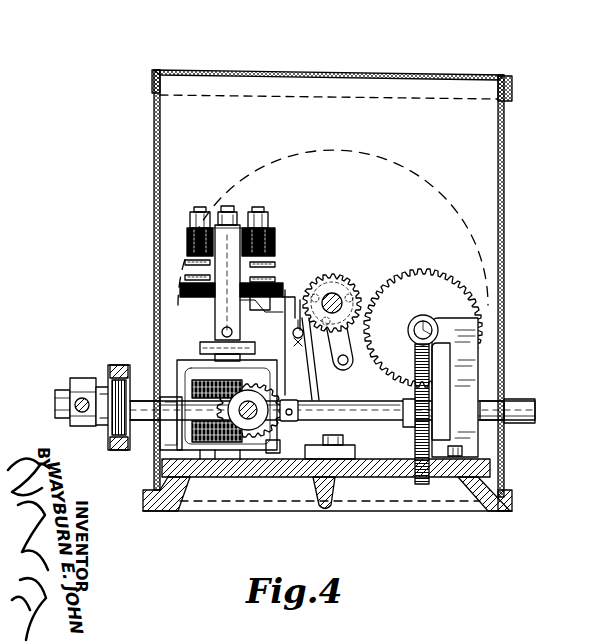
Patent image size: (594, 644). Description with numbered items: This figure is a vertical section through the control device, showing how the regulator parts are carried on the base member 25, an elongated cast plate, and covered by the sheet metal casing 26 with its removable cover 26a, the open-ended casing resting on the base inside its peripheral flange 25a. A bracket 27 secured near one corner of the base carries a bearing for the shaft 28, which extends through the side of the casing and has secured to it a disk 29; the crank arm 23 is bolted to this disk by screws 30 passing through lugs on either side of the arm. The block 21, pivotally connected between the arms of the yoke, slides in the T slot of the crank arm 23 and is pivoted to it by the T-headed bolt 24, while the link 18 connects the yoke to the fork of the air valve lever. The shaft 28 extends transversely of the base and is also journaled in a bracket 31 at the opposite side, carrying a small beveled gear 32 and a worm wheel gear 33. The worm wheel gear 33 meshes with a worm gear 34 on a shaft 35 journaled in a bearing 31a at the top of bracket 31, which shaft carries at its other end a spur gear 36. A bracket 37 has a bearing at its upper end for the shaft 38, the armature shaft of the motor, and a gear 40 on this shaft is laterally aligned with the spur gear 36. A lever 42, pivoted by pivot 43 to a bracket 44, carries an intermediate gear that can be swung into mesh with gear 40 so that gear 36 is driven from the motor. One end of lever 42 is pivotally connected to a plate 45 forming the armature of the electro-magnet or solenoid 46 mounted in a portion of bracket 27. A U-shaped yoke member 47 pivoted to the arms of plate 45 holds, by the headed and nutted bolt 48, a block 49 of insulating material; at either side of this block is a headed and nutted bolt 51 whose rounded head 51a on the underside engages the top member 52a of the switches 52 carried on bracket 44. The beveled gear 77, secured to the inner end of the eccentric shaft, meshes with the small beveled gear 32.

The link 18 is at (82, 396).
The block 21 is at (72, 385).
The crank arm 23 is at (103, 424).
The T-headed bolt 24 is at (58, 392).
The base member 25 is at (482, 512).
The peripheral flange 25a is at (505, 493).
The casing 26 is at (506, 118).
The removable cover 26a is at (506, 78).
The bracket 27 is at (230, 452).
The shaft 28 is at (513, 426).
The disk 29 is at (137, 424).
The screws 30 is at (118, 376).
The bracket 31 is at (467, 400).
The bearing 31a is at (500, 305).
The small beveled gear 32 is at (276, 400).
The worm wheel gear 33 is at (415, 436).
The worm gear 34 is at (411, 324).
The shaft 35 is at (458, 319).
The spur gear 36 is at (437, 270).
The bracket 37 is at (333, 445).
The shaft 38 is at (292, 300).
The gear 40 is at (350, 285).
The lever 42 is at (246, 306).
The pivot 43 is at (293, 340).
The bracket 44 is at (333, 292).
The plate 45 is at (205, 344).
The electro-magnet or solenoid 46 is at (193, 378).
The member 47 is at (218, 222).
The headed and nutted bolt 48 is at (228, 212).
The block of insulating material 49 is at (190, 235).
The headed and nutted bolt 51 is at (260, 213).
The rounded heads 51a is at (274, 262).
The switches 52 is at (278, 290).
The top member 52a is at (272, 270).
The beveled gear 77 is at (278, 450).